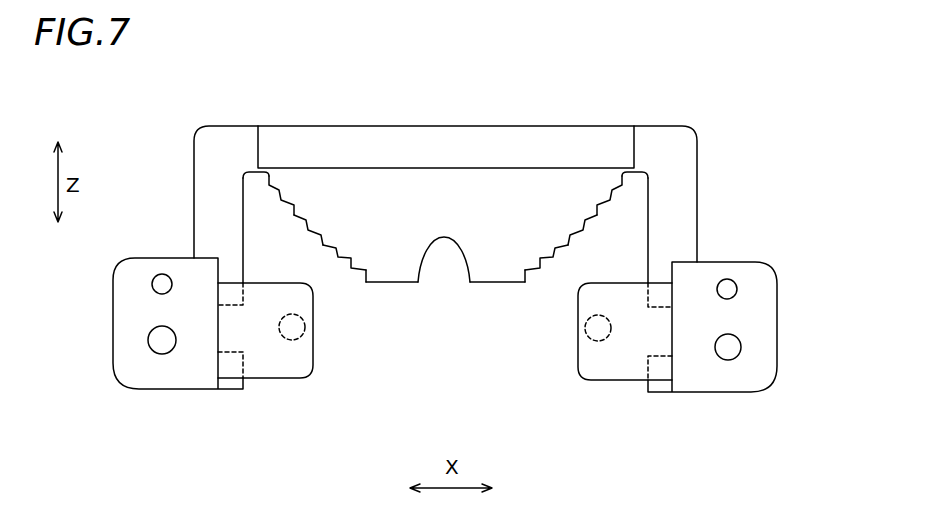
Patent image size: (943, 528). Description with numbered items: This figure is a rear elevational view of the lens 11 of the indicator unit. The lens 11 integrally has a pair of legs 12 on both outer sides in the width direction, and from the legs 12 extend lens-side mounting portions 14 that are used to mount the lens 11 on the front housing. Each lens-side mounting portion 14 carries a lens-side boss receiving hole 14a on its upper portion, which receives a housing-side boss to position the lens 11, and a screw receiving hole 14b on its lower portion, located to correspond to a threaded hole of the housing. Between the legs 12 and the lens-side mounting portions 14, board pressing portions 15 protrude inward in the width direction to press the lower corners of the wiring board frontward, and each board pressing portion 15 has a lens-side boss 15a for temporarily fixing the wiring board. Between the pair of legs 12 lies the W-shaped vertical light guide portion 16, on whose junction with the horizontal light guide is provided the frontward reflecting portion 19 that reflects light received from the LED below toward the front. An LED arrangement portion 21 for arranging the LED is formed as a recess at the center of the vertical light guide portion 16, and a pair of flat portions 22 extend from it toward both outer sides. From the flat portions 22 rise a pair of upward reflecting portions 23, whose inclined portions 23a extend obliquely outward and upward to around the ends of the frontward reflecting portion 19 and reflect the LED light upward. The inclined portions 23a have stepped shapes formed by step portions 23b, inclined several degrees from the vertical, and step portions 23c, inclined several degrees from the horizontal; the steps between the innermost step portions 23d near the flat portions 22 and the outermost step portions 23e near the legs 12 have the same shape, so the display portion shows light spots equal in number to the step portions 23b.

The lens 11 is at (745, 114).
The legs 12 is at (217, 188).
The lens-side mounting portions 14 is at (162, 377).
The lens-side boss receiving holes 14a is at (152, 283).
The screw receiving holes 14b is at (150, 348).
The board pressing portions 15 is at (262, 367).
The lens-side bosses 15a is at (293, 340).
The vertical light guide portion 16 is at (403, 190).
The frontward reflecting portion 19 is at (448, 160).
The LED arrangement portion 21 is at (442, 238).
The flat portions 22 is at (392, 283).
The upward reflecting portions 23 is at (328, 238).
The inclined portions 23a is at (303, 240).
The step portions 23b is at (315, 224).
The step portions 23c is at (296, 202).
The innermost step portions 23d is at (366, 269).
The outermost step portions 23e is at (245, 173).